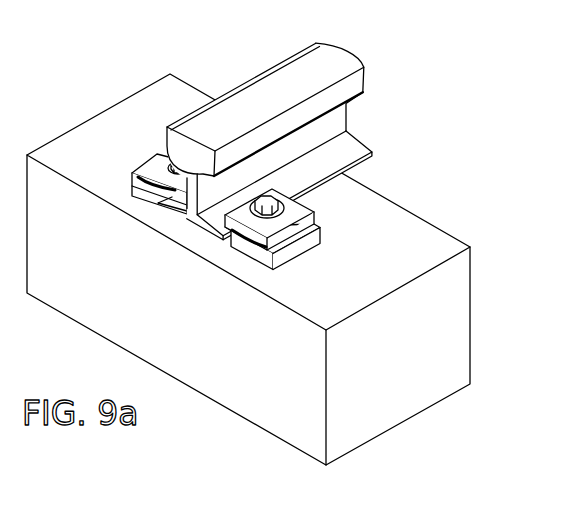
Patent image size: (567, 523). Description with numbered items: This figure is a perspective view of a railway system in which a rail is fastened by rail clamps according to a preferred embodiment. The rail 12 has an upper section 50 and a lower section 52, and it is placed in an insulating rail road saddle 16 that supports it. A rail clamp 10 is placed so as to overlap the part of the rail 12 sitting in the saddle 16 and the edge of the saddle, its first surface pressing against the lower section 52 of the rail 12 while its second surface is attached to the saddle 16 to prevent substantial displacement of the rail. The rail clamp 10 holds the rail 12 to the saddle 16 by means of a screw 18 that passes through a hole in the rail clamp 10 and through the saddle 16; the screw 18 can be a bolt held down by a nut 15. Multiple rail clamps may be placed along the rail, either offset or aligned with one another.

The rail clamp 10 is at (313, 218).
The rail 12 is at (363, 72).
The nut 15 is at (280, 194).
The insulating rail road saddle 16 is at (303, 242).
The screw 18 is at (346, 153).
The upper section 50 is at (244, 82).
The lower section 52 is at (174, 203).